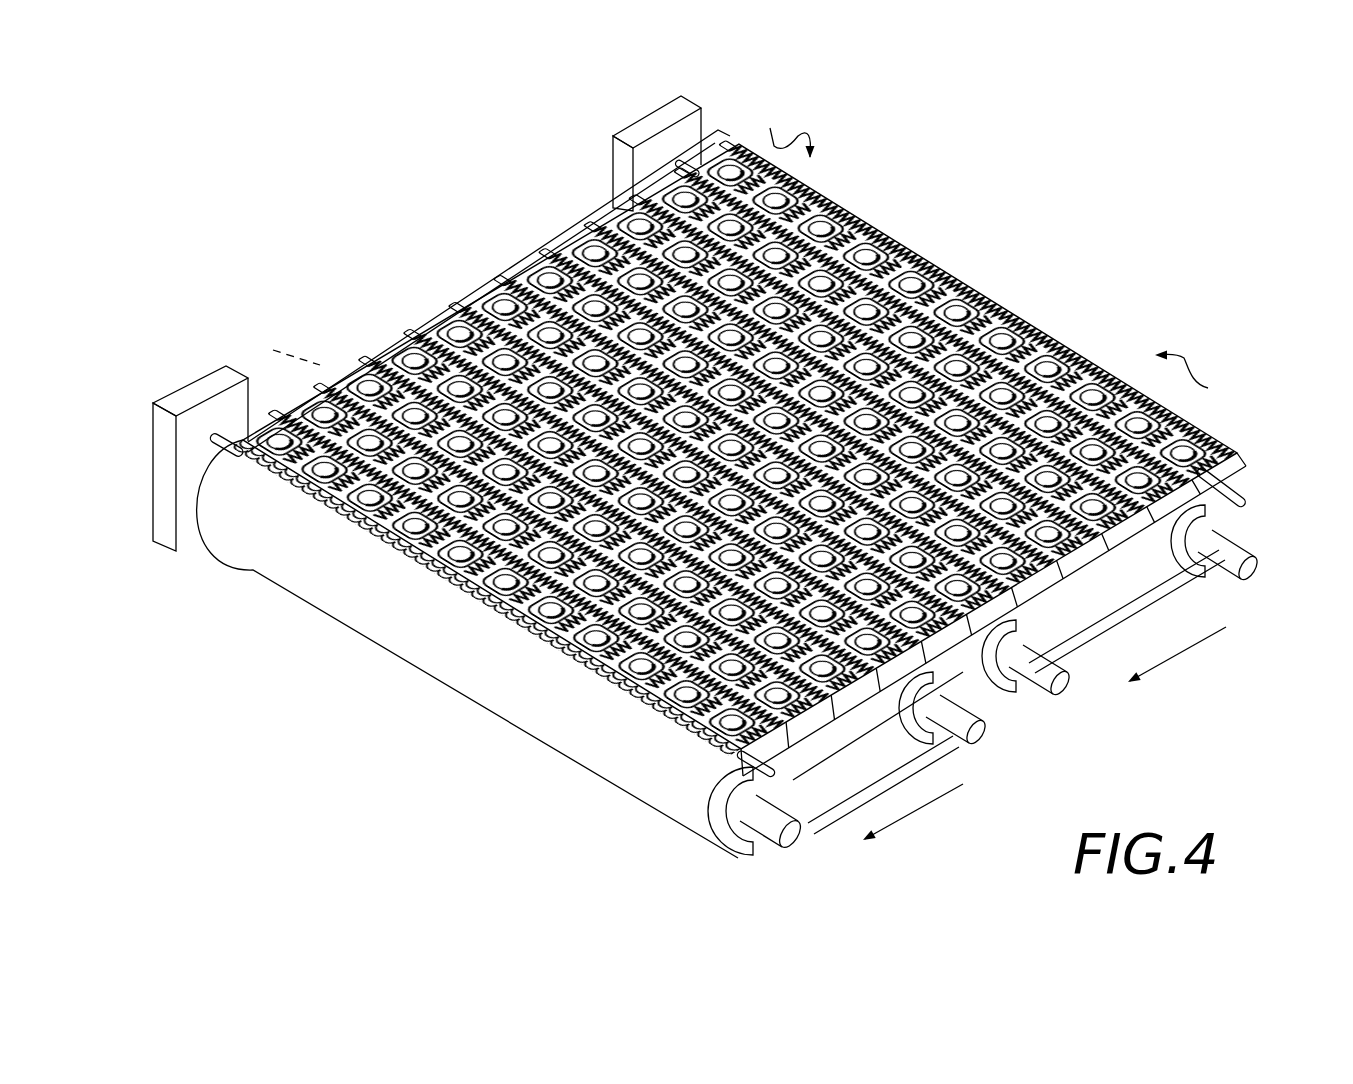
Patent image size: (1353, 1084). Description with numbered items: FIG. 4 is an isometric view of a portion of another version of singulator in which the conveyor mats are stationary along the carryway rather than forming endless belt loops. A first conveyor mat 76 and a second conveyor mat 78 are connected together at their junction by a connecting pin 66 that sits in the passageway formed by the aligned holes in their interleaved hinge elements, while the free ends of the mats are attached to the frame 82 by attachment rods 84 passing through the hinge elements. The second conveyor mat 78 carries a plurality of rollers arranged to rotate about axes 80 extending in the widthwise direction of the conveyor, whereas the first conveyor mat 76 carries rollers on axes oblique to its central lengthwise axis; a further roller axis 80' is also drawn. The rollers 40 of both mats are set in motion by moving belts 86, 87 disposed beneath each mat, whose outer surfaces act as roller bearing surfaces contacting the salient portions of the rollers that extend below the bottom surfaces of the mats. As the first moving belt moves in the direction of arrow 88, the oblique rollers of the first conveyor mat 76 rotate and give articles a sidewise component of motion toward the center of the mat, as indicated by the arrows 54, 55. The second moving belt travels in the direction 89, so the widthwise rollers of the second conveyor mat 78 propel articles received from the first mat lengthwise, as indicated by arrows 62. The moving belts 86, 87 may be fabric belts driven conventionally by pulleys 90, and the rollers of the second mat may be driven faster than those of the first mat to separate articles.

The rollers 40 is at (980, 277).
The arrow 54 is at (1202, 378).
The arrow 55 is at (793, 122).
The arrows 62 is at (286, 530).
The connecting pin 66 is at (1085, 560).
The first conveyor mat 76 is at (596, 213).
The second conveyor mat 78 is at (330, 363).
The axes 80 is at (275, 343).
The rod 80' is at (883, 774).
The frame 82 is at (188, 378).
The attachment rods 84 is at (216, 452).
The moving belt 86 is at (1213, 574).
The moving belt 87 is at (600, 774).
The arrow 88 is at (1182, 644).
The direction 89 is at (919, 800).
The pulleys 90 is at (728, 840).